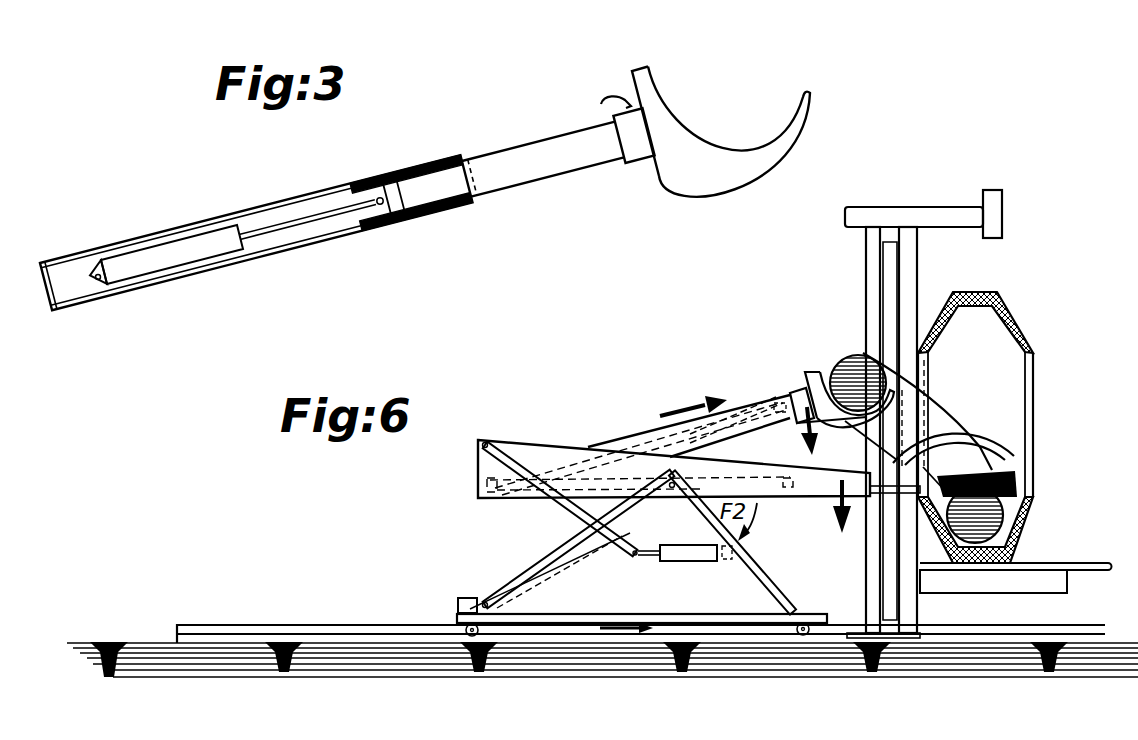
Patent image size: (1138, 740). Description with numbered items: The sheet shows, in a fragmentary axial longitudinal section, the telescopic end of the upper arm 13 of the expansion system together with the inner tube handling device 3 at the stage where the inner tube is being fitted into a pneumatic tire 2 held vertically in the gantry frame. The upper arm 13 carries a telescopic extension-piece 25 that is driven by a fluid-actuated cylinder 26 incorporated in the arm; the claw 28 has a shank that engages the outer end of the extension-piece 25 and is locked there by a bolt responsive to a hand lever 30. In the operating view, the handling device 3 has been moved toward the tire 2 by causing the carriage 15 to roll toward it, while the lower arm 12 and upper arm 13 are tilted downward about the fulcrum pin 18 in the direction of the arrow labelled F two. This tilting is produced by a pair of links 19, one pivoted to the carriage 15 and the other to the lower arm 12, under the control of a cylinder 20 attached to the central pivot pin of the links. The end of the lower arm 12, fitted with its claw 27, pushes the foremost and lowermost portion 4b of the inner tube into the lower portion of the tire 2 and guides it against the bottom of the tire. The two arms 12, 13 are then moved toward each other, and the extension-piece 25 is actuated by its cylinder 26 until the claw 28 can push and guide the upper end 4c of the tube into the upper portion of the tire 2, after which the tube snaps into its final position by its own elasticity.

In FIG. 6, the pneumatic tire 2 is at (1015, 308).
In FIG. 6, the inner tube handling device 3 is at (543, 436).
In FIG. 6, the foremost and lowermost portion of the inner tube 4b is at (1027, 520).
In FIG. 6, the upper end of the inner tube 4c is at (847, 360).
In FIG. 6, the lower arm 12 is at (787, 473).
In FIG. 3, the upper arm 13 is at (137, 241).
In FIG. 6, the upper arm 13 is at (648, 437).
In FIG. 6, the carriage 15 is at (597, 613).
In FIG. 6, the fulcrum pin 18 is at (670, 497).
In FIG. 6, the links 19 is at (567, 505).
In FIG. 6, the cylinder 20 is at (678, 557).
In FIG. 3, the telescopic extension-piece 25 is at (488, 163).
In FIG. 3, the fluid-actuated cylinder 26 is at (203, 249).
In FIG. 6, the claw 27 is at (980, 443).
In FIG. 3, the claw 28 is at (714, 170).
In FIG. 6, the claw 28 is at (840, 420).
In FIG. 3, the hand lever 30 is at (611, 96).